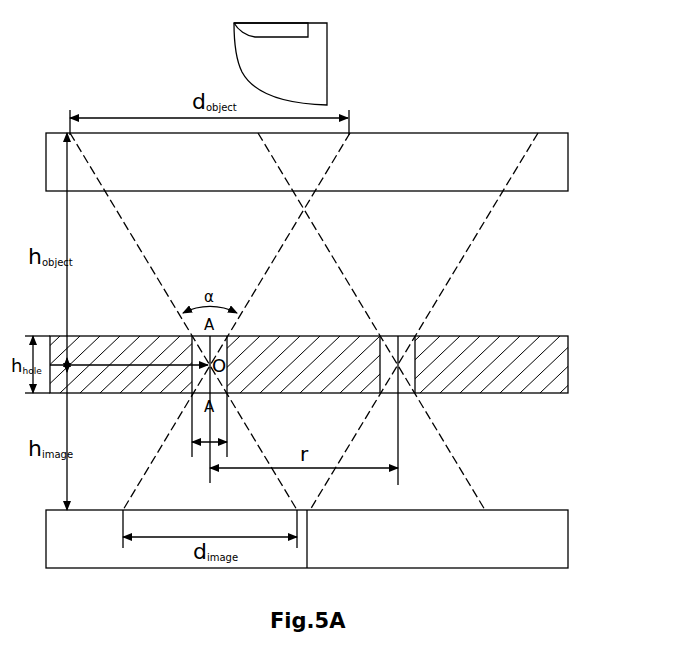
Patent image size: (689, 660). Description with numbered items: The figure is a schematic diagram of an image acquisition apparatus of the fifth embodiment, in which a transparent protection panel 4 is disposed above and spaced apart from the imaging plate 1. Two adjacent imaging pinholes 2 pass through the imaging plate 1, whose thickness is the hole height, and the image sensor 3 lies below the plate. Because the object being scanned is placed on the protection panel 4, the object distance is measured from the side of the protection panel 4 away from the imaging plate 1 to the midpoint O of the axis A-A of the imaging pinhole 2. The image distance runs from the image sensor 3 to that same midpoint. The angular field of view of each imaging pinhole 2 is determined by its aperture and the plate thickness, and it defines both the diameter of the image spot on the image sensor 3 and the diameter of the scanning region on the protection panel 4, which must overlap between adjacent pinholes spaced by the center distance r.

The imaging plate 1 is at (553, 370).
The imaging pinhole 2 is at (420, 333).
The image sensor 3 is at (552, 538).
The transparent protection panel 4 is at (478, 155).